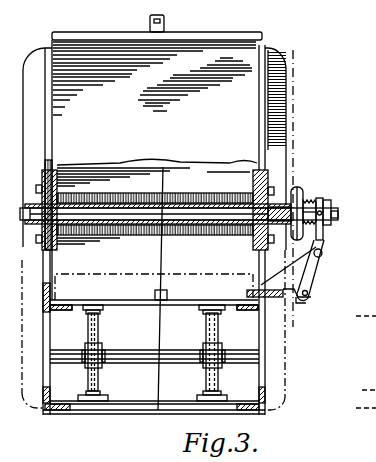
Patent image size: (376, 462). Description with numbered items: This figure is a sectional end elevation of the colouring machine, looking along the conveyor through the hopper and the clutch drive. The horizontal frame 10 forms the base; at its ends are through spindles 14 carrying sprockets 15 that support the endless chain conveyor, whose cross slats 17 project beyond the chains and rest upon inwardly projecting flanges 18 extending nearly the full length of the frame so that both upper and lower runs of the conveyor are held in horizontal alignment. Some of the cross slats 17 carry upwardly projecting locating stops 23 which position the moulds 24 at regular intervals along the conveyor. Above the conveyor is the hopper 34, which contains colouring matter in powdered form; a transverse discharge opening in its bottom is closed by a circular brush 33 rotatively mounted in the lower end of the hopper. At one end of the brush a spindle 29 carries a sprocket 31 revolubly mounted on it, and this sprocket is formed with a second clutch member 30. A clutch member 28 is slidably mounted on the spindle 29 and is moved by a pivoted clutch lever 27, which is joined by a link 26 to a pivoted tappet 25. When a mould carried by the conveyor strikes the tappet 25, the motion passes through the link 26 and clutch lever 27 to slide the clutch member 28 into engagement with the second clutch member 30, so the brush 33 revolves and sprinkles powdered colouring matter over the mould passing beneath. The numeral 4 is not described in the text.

The section line 4- 4 is at (293, 50).
The horizontal frame 10 is at (258, 389).
The through spindle 14 is at (130, 362).
The sprocket 15 is at (206, 333).
The cross slat 17 is at (155, 296).
The inwardly projecting flange 18 is at (60, 311).
The locating stop 23 is at (167, 293).
The mould 24 is at (112, 274).
The pivoted tappet 25 is at (247, 293).
The link 26 is at (303, 298).
The pivoted clutch lever 27 is at (316, 290).
The clutch member 28 is at (322, 200).
The spindle 29 is at (338, 215).
The second clutch member 30 is at (310, 200).
The sprocket 31 is at (297, 187).
The circular brush 33 is at (187, 197).
The hopper 34 is at (154, 90).